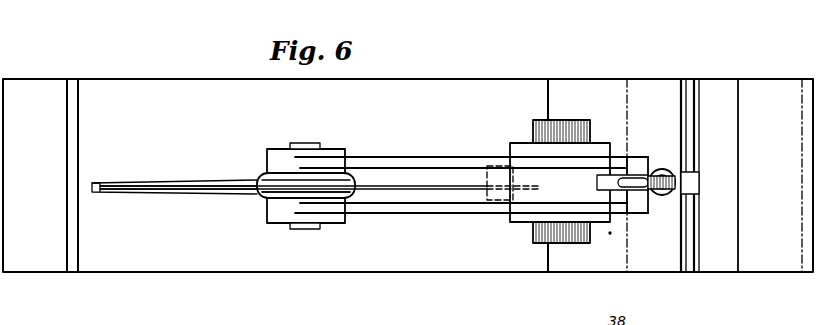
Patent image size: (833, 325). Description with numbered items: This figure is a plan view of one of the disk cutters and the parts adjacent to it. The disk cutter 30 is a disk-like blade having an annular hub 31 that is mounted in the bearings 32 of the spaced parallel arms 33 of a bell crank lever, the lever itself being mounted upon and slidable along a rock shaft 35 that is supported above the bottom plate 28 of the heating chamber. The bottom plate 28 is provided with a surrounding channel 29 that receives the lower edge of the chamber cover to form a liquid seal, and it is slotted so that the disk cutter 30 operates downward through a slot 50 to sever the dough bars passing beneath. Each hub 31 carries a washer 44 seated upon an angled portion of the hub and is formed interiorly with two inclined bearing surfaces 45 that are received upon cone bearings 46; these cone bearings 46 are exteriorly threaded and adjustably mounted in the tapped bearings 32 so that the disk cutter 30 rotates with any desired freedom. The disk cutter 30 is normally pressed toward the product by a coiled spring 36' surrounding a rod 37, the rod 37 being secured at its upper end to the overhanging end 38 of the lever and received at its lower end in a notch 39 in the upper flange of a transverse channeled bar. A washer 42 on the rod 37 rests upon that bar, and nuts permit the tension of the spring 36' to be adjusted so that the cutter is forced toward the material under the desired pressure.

The bottom plate 28 is at (512, 86).
The surrounding channel 29 is at (766, 88).
The disk cutter 30 is at (230, 192).
The hub 31 is at (262, 178).
The bearings 32 is at (331, 152).
The parallel arms 33 is at (424, 161).
The rock shaft 35 is at (536, 131).
The coiled spring 36' is at (687, 195).
The rod 37 is at (648, 196).
The overhanging end 38 is at (634, 161).
The notch 39 is at (681, 183).
The washer 42 is at (656, 173).
The washer 44 is at (270, 195).
The inclined bearing surfaces 45 is at (302, 144).
The cone bearings 46 is at (305, 228).
The slot 50 is at (100, 192).